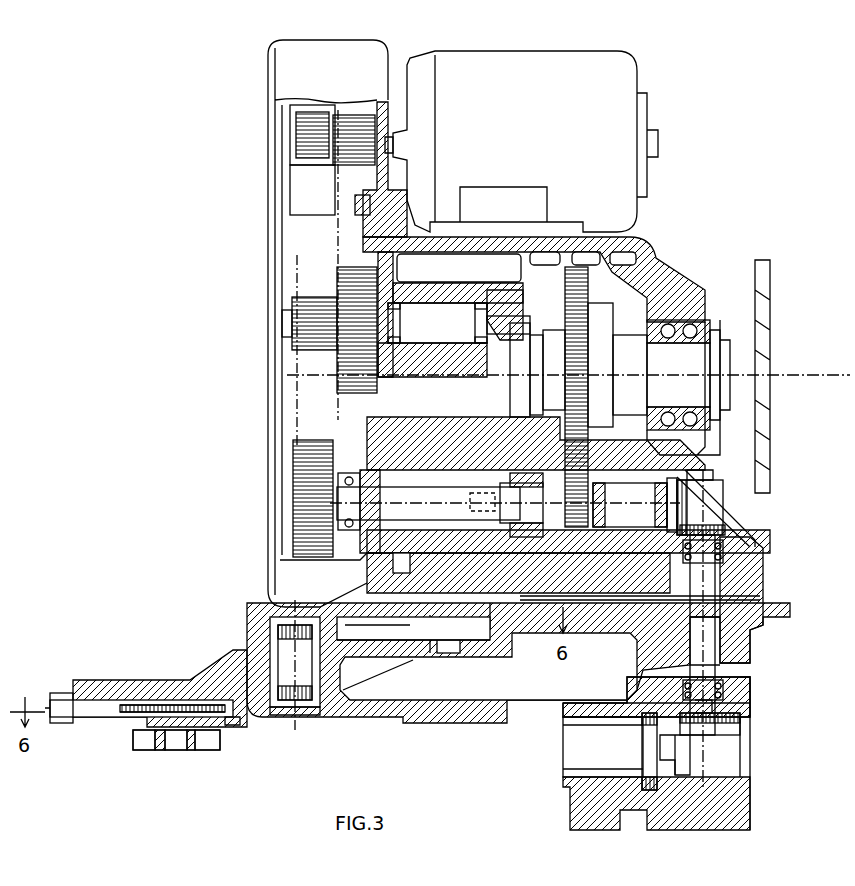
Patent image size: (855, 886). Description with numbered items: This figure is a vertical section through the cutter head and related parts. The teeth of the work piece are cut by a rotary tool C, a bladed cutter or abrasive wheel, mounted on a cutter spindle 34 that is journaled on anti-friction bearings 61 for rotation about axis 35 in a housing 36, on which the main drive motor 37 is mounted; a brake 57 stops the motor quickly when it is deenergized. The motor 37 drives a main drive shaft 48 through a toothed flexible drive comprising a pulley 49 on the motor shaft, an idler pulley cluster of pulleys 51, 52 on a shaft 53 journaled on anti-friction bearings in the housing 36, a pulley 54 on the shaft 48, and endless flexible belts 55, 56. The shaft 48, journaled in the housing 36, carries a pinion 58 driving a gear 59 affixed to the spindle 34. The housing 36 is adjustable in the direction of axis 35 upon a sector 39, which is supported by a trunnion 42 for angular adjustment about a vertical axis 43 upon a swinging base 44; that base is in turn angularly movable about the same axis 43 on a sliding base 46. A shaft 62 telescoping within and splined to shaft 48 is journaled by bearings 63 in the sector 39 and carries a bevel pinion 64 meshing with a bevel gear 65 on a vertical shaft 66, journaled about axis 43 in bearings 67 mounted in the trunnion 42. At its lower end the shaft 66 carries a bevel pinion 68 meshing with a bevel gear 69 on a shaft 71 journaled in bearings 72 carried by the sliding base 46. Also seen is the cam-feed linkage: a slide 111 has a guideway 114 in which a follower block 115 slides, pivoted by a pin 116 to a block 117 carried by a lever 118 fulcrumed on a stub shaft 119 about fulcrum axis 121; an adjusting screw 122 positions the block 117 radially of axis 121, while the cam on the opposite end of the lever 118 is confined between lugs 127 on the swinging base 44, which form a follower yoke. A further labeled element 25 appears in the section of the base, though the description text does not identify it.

The main drive motor 37 is at (530, 137).
The brake 57 is at (300, 165).
The pulley 49 is at (368, 170).
The endless flexible belt 55 is at (325, 255).
The pulley 52 is at (320, 298).
The endless flexible belt 56 is at (285, 365).
The pulley 51 is at (338, 380).
The pulley 54 is at (320, 440).
The shaft 53 is at (440, 334).
The axis 35 is at (490, 380).
The anti-friction bearings 61 is at (528, 402).
The gear 59 is at (585, 292).
The housing 36 is at (700, 292).
The cutter spindle 34 is at (685, 372).
The rotary tool C is at (738, 300).
The bearings 63 is at (700, 458).
The bevel pinion 64 is at (695, 498).
The bevel gear 65 is at (718, 515).
The sector 39 is at (750, 537).
The main drive shaft 48 is at (440, 521).
The pinion 58 is at (560, 503).
The shaft 62 is at (640, 514).
The bearings 67 is at (723, 553).
The trunnion 42 is at (748, 590).
The vertical shaft 66 is at (713, 616).
The vertical axis 43 is at (720, 635).
The swinging base 44 is at (580, 608).
The sliding base 46 is at (507, 700).
The lugs 127 is at (460, 632).
The slide slot 25 is at (350, 640).
The stub shaft 119 is at (303, 674).
The lever 118 is at (163, 682).
The adjusting screw 122 is at (108, 723).
The slide 111 is at (222, 740).
The block 117 is at (250, 727).
The fulcrum axis 121 is at (300, 725).
The guideway 114 is at (140, 750).
The follower block 115 is at (190, 750).
The pin 116 is at (177, 752).
The shaft 71 is at (612, 767).
The bearings 72 is at (648, 770).
The bevel pinion 68 is at (740, 724).
The bevel gear 69 is at (690, 765).